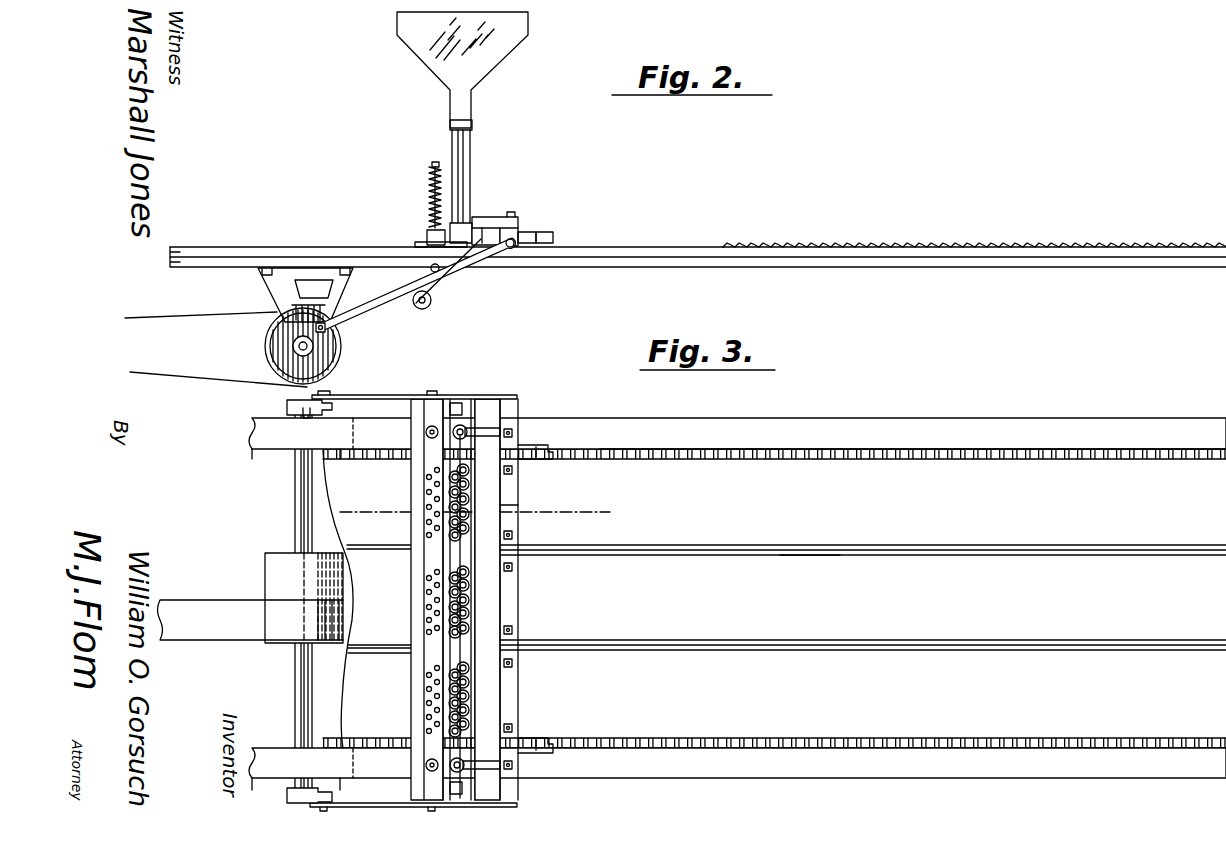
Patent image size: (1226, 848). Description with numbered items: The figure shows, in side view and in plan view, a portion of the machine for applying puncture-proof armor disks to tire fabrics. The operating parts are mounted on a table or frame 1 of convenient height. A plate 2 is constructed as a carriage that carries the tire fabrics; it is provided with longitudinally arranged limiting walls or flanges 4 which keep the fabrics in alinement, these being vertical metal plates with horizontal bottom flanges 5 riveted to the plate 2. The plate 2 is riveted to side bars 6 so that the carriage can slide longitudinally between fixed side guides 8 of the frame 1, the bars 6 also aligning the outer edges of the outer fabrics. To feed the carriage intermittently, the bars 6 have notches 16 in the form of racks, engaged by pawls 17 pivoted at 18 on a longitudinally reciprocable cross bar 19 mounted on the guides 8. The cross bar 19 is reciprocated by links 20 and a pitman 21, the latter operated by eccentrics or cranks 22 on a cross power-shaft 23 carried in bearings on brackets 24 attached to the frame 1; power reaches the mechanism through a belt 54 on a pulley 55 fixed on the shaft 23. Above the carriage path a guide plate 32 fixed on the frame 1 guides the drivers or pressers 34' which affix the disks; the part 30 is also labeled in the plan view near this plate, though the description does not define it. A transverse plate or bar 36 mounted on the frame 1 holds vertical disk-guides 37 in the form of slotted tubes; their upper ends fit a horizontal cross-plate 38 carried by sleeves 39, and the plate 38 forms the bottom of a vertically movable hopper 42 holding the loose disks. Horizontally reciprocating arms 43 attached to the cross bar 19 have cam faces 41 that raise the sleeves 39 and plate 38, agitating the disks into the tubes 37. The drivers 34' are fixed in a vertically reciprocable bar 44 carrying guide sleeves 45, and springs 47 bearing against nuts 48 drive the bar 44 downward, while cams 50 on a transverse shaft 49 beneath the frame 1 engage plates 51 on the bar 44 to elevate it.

In FIG. 2, the table or frame 1 is at (674, 267).
In FIG. 3, the table or frame 1 is at (778, 778).
In FIG. 3, the plate 2 is at (810, 582).
In FIG. 3, the limiting flanges 4 is at (928, 738).
In FIG. 3, the bottom flanges 5 is at (1010, 545).
In FIG. 2, the side bars 6 is at (948, 247).
In FIG. 3, the side bars 6 is at (1078, 459).
In FIG. 2, the side guides 8 is at (668, 247).
In FIG. 3, the side guides 8 is at (1010, 418).
In FIG. 2, the notches 16 is at (856, 246).
In FIG. 3, the notches 16 is at (694, 460).
In FIG. 2, the pawls 17 is at (528, 238).
In FIG. 3, the pawls 17 is at (538, 459).
In FIG. 2, the pawl pivot 18 is at (553, 238).
In FIG. 3, the pawl pivot 18 is at (548, 450).
In FIG. 2, the cross bar 19 is at (510, 236).
In FIG. 3, the cross bar 19 is at (505, 512).
In FIG. 2, the links 20 is at (470, 268).
In FIG. 3, the links 20 is at (482, 400).
In FIG. 2, the pitman 21 is at (400, 296).
In FIG. 3, the pitman 21 is at (404, 399).
In FIG. 2, the eccentrics or cranks 22 is at (326, 332).
In FIG. 3, the eccentrics or cranks 22 is at (292, 800).
In FIG. 2, the cross power-shaft 23 is at (282, 360).
In FIG. 3, the cross power-shaft 23 is at (296, 505).
In FIG. 2, the brackets 24 is at (268, 290).
In FIG. 3, the plate 30 is at (488, 506).
In FIG. 2, the guide plate 32 is at (498, 248).
In FIG. 3, the guide plate 32 is at (473, 588).
In FIG. 3, the drivers or pressers 34' is at (403, 601).
In FIG. 2, the transverse plate or bar 36 is at (455, 232).
In FIG. 3, the transverse plate or bar 36 is at (458, 656).
In FIG. 2, the disk-guides 37 is at (470, 150).
In FIG. 3, the disk-guides 37 is at (452, 534).
In FIG. 2, the cross-plate 38 is at (450, 126).
In FIG. 2, the sleeves 39 is at (452, 142).
In FIG. 2, the cam faces 41 is at (478, 228).
In FIG. 3, the cam faces 41 is at (470, 430).
In FIG. 2, the hopper 42 is at (430, 45).
In FIG. 2, the reciprocating arms 43 is at (490, 222).
In FIG. 3, the reciprocating arms 43 is at (498, 432).
In FIG. 2, the vertically reciprocable bar 44 is at (430, 236).
In FIG. 3, the vertically reciprocable bar 44 is at (432, 460).
In FIG. 2, the guide sleeves 45 is at (428, 195).
In FIG. 2, the springs 47 is at (430, 178).
In FIG. 2, the nuts 48 is at (432, 164).
In FIG. 2, the transverse shaft 49 is at (430, 308).
In FIG. 2, the cams 50 is at (430, 268).
In FIG. 3, the cams 50 is at (458, 403).
In FIG. 2, the plates 51 is at (415, 245).
In FIG. 2, the belt 54 is at (165, 320).
In FIG. 3, the belt 54 is at (208, 612).
In FIG. 2, the pulley 55 is at (272, 334).
In FIG. 3, the pulley 55 is at (275, 645).